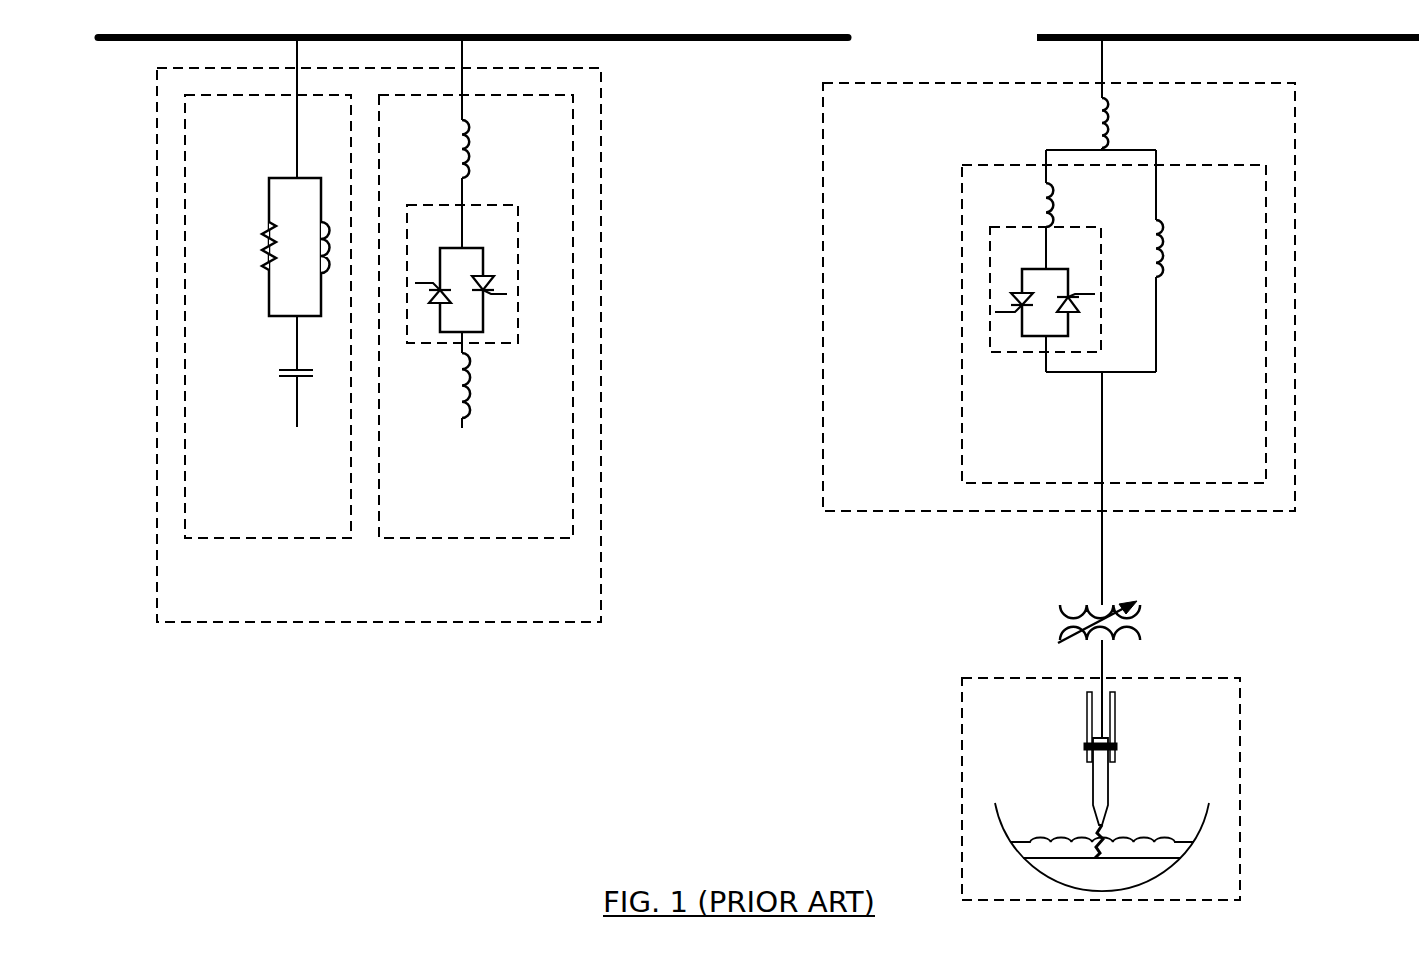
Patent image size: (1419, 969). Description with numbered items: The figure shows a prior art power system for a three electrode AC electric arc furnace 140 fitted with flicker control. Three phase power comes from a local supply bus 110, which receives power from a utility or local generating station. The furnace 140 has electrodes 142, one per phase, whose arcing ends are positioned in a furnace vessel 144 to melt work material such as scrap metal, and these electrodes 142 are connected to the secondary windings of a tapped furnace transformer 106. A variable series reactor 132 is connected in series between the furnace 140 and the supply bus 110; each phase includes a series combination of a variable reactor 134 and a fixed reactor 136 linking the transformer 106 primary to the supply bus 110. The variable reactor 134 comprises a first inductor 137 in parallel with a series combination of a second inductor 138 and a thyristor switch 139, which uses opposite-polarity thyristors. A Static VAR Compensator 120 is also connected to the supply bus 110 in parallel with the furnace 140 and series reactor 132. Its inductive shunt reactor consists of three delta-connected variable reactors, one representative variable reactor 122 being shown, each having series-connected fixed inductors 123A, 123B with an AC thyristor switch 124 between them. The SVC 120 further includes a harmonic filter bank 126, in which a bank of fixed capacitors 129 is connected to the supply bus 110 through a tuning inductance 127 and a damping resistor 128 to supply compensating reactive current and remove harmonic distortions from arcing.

The supply bus 110 is at (1035, 52).
The Static VAR Compensator (SVC) 120 is at (590, 610).
The harmonic filter bank 126 is at (288, 528).
The tuning inductance 127 is at (325, 232).
The damping resistor 128 is at (263, 232).
The bank of fixed capacitors 129 is at (278, 371).
The variable reactor 122 is at (550, 528).
The fixed inductor 123A is at (470, 155).
The fixed inductor 123B is at (470, 395).
The AC thyristor switch 124 is at (455, 242).
The variable series reactor 132 is at (872, 500).
The variable reactor 134 is at (1012, 472).
The fixed reactor 136 is at (1109, 127).
The first inductor 137 is at (1164, 255).
The second inductor 138 is at (1054, 210).
The thyristor switch 139 is at (1038, 264).
The furnace transformer 106 is at (1140, 608).
The electric arc furnace (EAF) 140 is at (1058, 716).
The electrodes 142 is at (1103, 788).
The furnace vessel 144 is at (1207, 815).